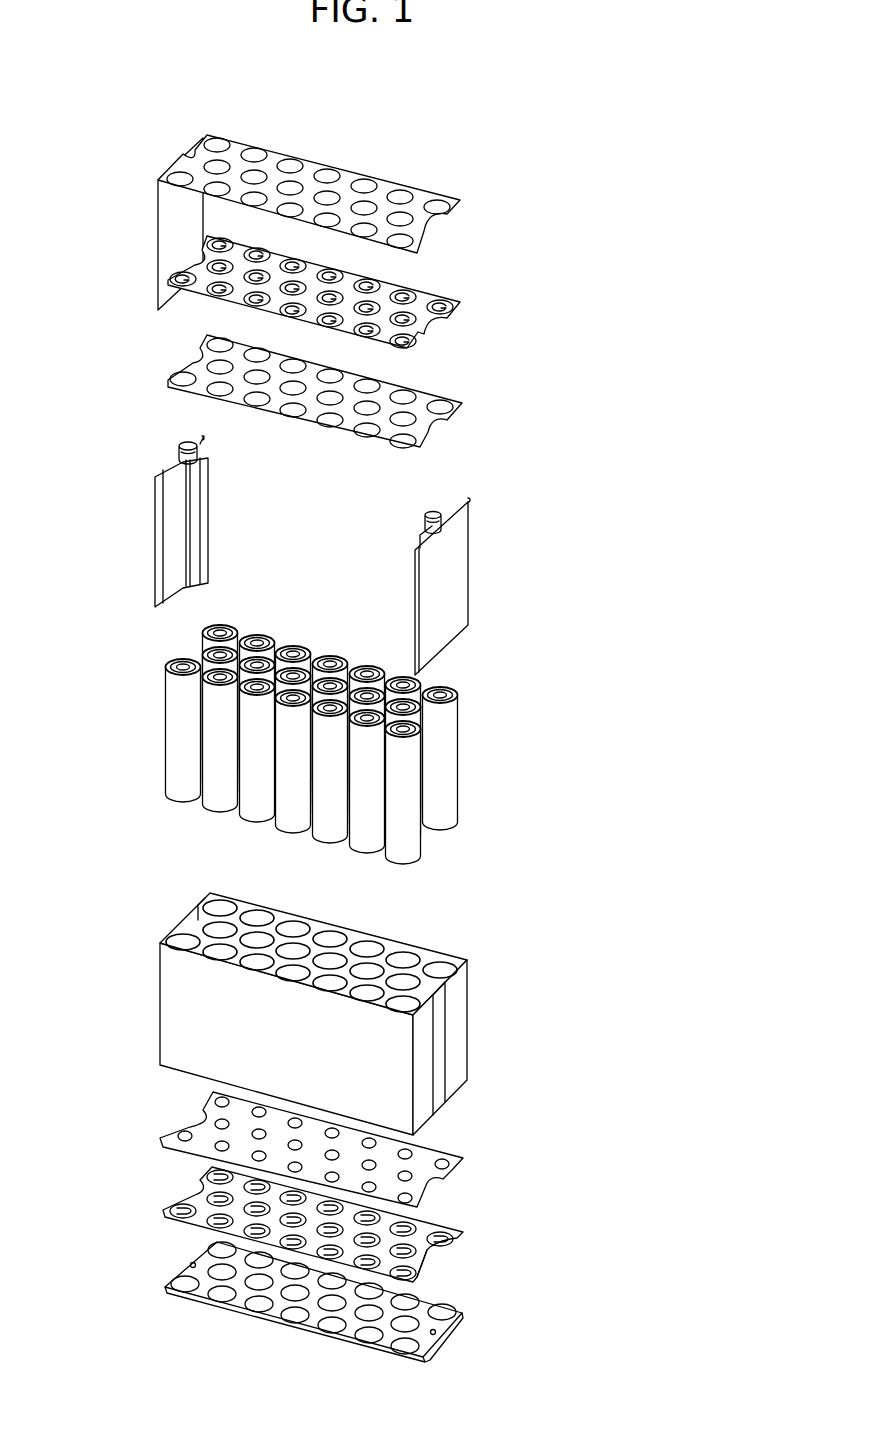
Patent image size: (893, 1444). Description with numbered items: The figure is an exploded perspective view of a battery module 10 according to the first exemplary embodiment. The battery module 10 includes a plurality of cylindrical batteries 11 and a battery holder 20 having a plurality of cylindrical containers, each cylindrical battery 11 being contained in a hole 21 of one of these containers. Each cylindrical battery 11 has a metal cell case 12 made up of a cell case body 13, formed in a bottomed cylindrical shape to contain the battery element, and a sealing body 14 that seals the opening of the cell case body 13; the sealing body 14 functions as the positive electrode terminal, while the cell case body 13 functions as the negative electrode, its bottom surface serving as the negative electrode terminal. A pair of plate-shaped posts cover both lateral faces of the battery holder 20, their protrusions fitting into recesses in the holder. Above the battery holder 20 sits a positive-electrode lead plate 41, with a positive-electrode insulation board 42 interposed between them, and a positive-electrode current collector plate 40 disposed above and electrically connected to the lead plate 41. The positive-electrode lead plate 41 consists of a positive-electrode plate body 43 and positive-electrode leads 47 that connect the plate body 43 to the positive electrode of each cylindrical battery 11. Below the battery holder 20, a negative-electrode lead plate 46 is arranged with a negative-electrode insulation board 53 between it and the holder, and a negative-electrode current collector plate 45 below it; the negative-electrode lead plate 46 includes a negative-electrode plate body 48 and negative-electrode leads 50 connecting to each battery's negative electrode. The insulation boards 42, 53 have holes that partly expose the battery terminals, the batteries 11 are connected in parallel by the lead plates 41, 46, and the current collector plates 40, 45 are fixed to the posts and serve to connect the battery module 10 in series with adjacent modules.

The battery module 10 is at (493, 121).
The cylindrical battery 11 is at (284, 744).
The cell case 12 is at (109, 716).
The cell case body 13 is at (178, 712).
The sealing body 14 is at (183, 660).
The battery holder 20 is at (345, 994).
The hole 21 is at (325, 935).
The positive-electrode current collector plate 40 is at (200, 150).
The positive-electrode lead plate 41 is at (205, 283).
The positive-electrode insulation board 42 is at (168, 372).
The positive-electrode plate body 43 is at (349, 292).
The positive-electrode lead 47 is at (413, 295).
The negative-electrode current collector plate 45 is at (460, 1312).
The negative-electrode lead plate 46 is at (437, 1238).
The negative-electrode plate body 48 is at (415, 1280).
The negative-electrode lead 50 is at (360, 1224).
The negative-electrode insulation board 53 is at (448, 1160).